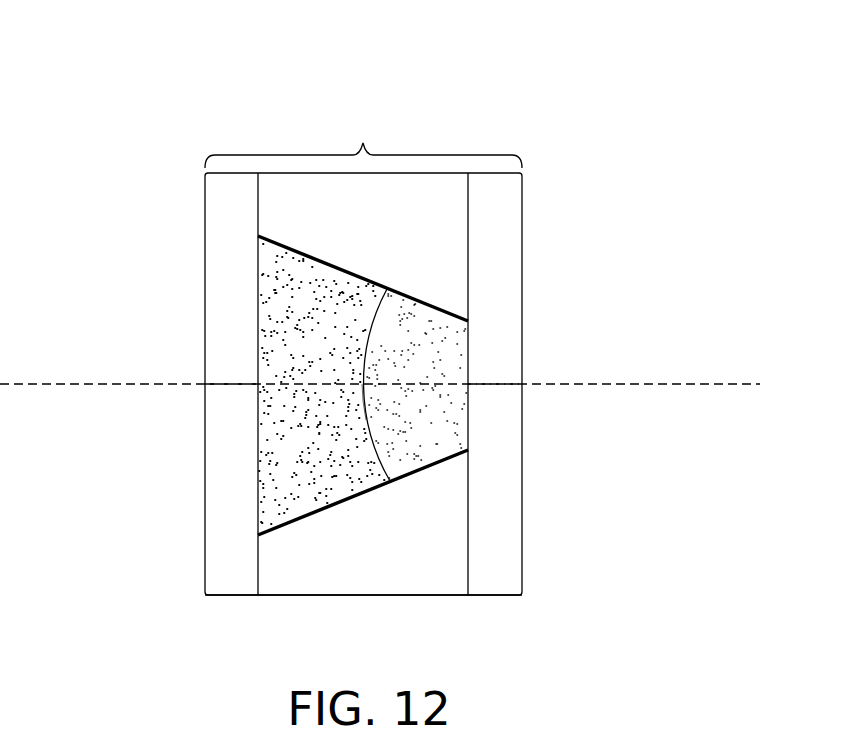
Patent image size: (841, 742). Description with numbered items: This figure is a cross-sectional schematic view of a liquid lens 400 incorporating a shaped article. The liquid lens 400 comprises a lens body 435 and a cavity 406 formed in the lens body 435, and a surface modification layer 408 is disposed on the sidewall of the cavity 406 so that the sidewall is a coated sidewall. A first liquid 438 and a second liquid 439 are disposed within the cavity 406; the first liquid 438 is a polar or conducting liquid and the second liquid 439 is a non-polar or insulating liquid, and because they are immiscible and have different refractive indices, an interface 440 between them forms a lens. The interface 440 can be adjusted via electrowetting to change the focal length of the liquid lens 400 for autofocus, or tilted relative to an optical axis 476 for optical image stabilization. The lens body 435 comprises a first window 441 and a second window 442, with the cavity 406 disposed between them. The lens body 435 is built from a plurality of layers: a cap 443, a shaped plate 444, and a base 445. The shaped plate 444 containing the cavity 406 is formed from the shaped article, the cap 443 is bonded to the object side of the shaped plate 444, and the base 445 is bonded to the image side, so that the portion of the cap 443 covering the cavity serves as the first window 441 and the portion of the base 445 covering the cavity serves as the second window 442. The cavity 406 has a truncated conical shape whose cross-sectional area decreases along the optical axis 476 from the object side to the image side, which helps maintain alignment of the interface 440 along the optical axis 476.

The liquid lens 400 is at (226, 99).
The lens body 435 is at (363, 136).
The optical axis 476 is at (78, 383).
The surface modification layer 408 is at (306, 250).
The cavity 406 is at (370, 273).
The first liquid 438 is at (280, 287).
The second liquid 439 is at (447, 350).
The first window 441 is at (225, 407).
The interface 440 is at (362, 395).
The cap 443 is at (223, 560).
The shaped plate 444 is at (333, 580).
The second window 442 is at (510, 472).
The base 445 is at (510, 573).